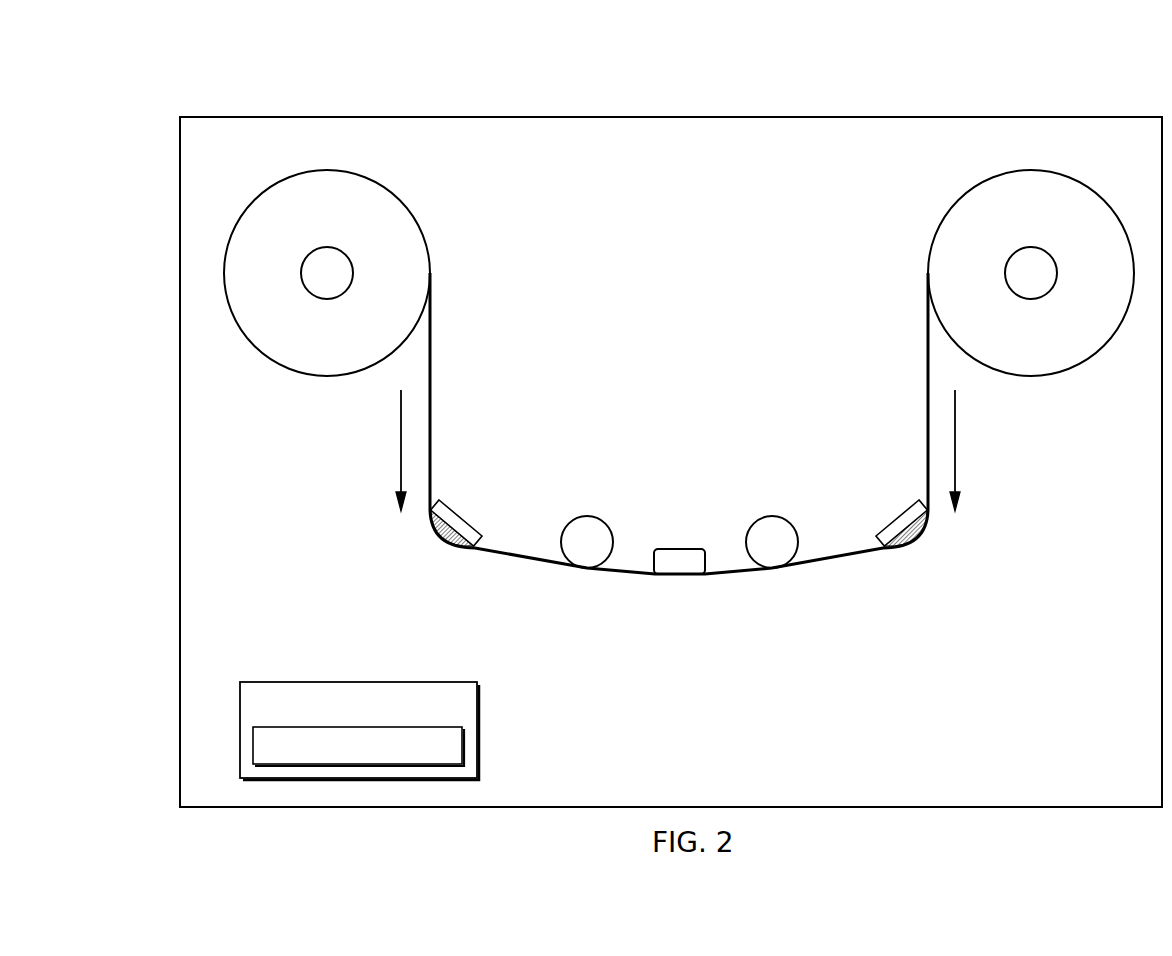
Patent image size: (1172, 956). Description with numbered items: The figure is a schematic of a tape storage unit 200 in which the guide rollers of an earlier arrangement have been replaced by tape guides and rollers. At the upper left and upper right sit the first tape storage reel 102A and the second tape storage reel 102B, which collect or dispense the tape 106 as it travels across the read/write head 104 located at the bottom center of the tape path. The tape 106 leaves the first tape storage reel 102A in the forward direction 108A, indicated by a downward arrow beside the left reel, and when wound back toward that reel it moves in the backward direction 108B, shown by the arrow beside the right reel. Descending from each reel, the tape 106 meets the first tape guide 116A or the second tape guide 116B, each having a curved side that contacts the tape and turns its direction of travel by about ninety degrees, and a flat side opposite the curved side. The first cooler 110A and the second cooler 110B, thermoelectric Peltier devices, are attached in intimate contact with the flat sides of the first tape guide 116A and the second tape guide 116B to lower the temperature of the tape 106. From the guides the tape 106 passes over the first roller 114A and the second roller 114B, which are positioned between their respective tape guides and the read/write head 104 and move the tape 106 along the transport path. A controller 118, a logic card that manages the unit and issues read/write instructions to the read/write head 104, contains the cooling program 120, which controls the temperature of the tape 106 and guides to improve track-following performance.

The tape storage unit 200 is at (222, 77).
The first tape storage reel 102A is at (409, 211).
The second tape storage reel 102B is at (950, 211).
The read/write head 104 is at (680, 549).
The tape 106 is at (431, 343).
The forward direction 108A is at (401, 458).
The backward direction 108B is at (958, 459).
The first cooler 110A is at (463, 519).
The second cooler 110B is at (900, 517).
The first roller 114A is at (583, 568).
The second roller 114B is at (772, 568).
The first tape guide 116A is at (440, 539).
The second tape guide 116B is at (915, 537).
The controller 118 is at (443, 682).
The cooling program 120 is at (462, 745).